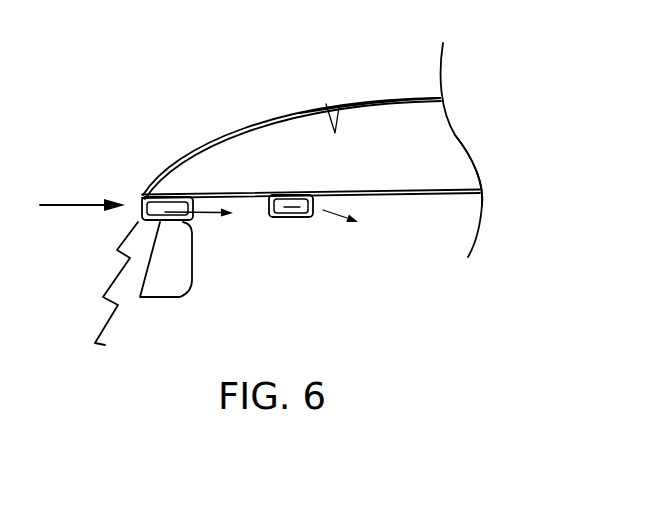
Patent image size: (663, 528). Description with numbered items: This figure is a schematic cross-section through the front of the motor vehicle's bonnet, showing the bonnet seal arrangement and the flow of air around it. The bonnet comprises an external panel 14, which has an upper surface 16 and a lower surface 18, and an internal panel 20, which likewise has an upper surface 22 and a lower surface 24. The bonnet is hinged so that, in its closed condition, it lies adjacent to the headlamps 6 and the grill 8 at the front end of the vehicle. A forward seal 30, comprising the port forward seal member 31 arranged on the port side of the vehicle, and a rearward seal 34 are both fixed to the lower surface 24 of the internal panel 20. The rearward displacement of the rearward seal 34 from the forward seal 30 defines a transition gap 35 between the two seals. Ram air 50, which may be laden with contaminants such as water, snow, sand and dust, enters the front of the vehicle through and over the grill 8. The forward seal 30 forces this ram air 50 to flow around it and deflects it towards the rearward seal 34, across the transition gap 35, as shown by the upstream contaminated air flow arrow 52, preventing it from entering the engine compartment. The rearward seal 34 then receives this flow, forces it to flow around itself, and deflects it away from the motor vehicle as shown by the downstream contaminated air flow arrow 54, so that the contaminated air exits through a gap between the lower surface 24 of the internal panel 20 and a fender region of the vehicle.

The headlamps 6 is at (106, 320).
The grill 8 is at (170, 288).
The external panel 14 is at (350, 85).
The upper surface 16 is at (404, 98).
The lower surface 18 is at (326, 104).
The internal panel 20 is at (411, 160).
The upper surface 22 is at (445, 189).
The lower surface 24 is at (462, 195).
The forward seal 30 is at (154, 165).
The port forward seal member 31 is at (145, 193).
The rearward seal 34 is at (285, 195).
The transition gap 35 is at (227, 205).
The ram air 50 is at (80, 205).
The upstream contaminated air flow arrow 52 is at (207, 213).
The downstream contaminated air flow arrow 54 is at (326, 219).